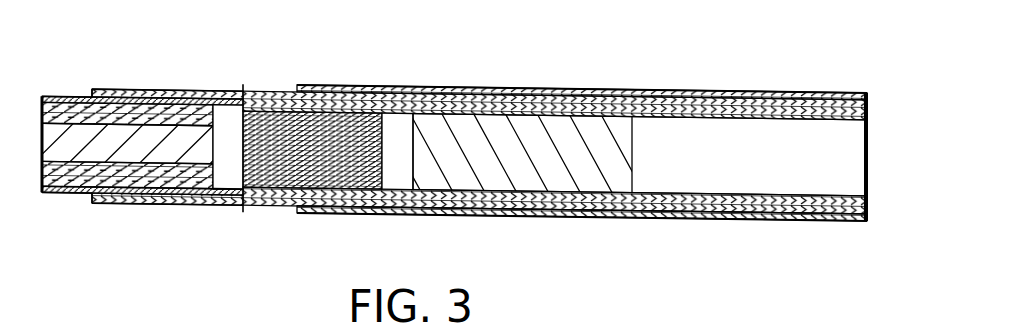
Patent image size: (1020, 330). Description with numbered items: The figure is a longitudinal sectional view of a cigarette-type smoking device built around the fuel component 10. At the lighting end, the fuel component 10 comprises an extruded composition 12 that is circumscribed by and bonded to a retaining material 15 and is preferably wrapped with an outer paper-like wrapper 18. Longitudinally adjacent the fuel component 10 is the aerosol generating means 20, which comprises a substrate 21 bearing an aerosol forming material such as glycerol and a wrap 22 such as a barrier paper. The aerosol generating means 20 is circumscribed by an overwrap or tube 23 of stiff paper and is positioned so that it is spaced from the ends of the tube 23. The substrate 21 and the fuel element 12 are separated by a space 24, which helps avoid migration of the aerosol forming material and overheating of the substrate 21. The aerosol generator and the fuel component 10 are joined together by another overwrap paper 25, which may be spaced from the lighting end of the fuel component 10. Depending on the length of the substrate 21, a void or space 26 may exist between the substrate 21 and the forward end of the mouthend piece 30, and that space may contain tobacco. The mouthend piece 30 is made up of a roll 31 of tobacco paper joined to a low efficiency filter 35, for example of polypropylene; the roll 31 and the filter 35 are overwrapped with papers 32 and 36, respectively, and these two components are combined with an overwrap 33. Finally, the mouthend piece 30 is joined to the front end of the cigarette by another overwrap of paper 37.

The fuel component 10 is at (56, 66).
The extruded composition 12 is at (146, 162).
The retaining material 15 is at (74, 193).
The outer paper-like wrapper 18 is at (75, 100).
The aerosol generating means 20 is at (243, 97).
The substrate 21 is at (342, 132).
The wrap 22 is at (278, 204).
The overwrap or tube 23 is at (239, 188).
The space 24 is at (222, 174).
The overwrap paper 25 is at (191, 93).
The void or space 26 is at (395, 182).
The mouthend piece 30 is at (504, 62).
The roll of tobacco paper 31 is at (548, 132).
The overwrap paper 32 is at (601, 114).
The overwrap 33 is at (603, 216).
The low efficiency filter 35 is at (711, 128).
The overwrap paper 36 is at (770, 96).
The overwrap of paper 37 is at (544, 217).